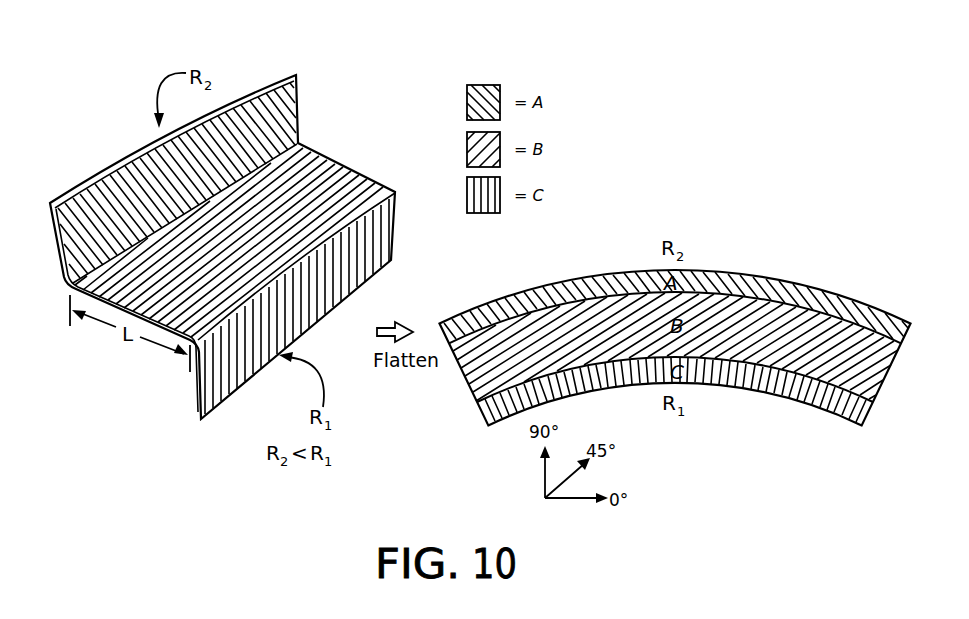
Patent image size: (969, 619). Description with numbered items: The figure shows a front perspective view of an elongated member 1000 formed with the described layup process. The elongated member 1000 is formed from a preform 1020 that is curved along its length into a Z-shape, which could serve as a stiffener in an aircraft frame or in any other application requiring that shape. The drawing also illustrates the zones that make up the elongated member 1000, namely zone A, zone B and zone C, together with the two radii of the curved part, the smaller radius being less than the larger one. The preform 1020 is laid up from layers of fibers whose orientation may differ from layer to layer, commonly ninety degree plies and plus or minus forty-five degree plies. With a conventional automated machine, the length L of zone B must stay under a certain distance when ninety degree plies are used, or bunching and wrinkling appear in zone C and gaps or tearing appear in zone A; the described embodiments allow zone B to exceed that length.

The elongated member 1000 is at (298, 116).
The preform 1020 is at (781, 312).
The zone A is at (177, 180).
The zone B is at (229, 242).
The zone C is at (297, 306).